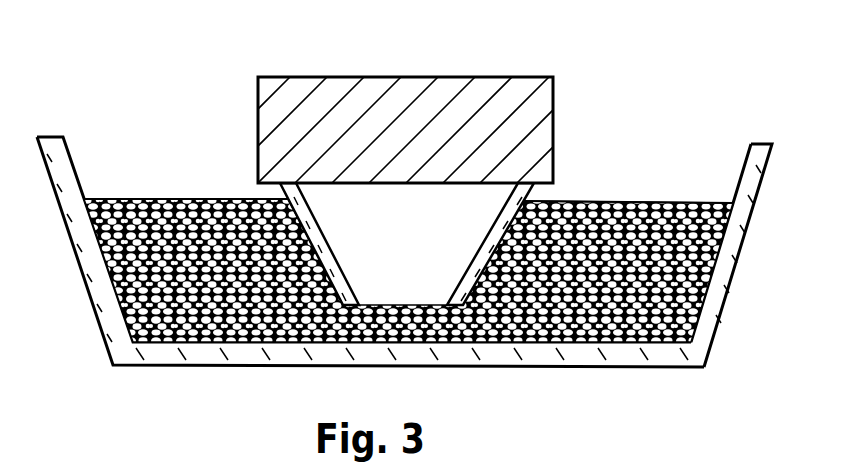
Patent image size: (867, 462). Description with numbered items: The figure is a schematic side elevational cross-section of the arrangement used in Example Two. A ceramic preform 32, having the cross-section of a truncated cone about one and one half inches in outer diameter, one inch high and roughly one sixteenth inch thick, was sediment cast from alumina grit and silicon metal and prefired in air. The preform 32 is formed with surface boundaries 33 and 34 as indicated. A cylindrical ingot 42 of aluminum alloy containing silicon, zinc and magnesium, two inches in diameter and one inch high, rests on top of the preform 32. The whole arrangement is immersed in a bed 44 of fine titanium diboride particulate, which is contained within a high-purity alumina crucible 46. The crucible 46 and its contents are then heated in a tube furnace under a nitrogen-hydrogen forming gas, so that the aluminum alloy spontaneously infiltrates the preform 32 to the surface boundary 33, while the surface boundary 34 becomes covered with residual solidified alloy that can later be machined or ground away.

The ceramic preform 32 is at (490, 340).
The surface boundary 33 is at (570, 200).
The surface boundary 34 is at (340, 258).
The cylindrical ingot 42 is at (407, 98).
The bed 44 is at (707, 307).
The crucible 46 is at (757, 200).